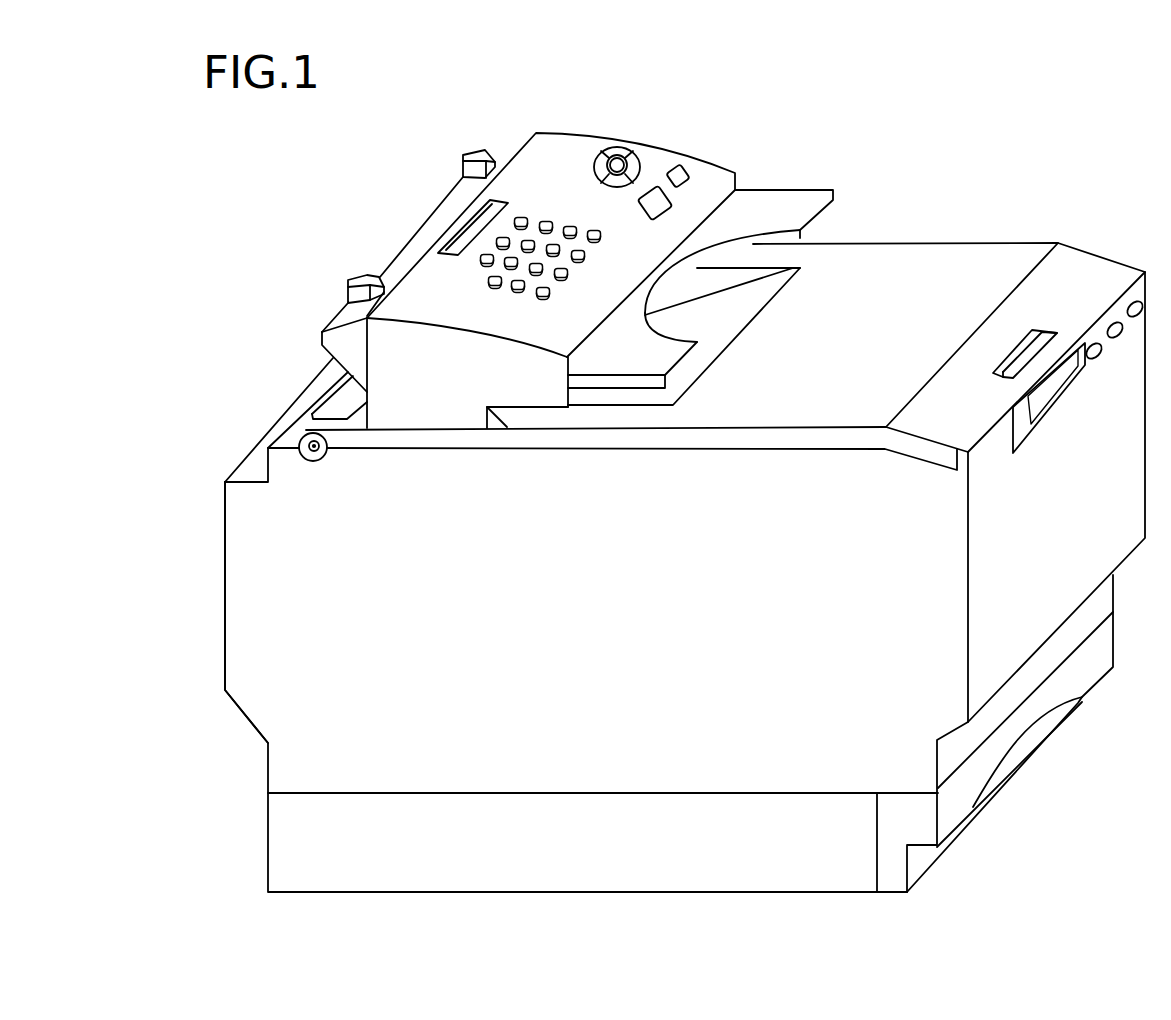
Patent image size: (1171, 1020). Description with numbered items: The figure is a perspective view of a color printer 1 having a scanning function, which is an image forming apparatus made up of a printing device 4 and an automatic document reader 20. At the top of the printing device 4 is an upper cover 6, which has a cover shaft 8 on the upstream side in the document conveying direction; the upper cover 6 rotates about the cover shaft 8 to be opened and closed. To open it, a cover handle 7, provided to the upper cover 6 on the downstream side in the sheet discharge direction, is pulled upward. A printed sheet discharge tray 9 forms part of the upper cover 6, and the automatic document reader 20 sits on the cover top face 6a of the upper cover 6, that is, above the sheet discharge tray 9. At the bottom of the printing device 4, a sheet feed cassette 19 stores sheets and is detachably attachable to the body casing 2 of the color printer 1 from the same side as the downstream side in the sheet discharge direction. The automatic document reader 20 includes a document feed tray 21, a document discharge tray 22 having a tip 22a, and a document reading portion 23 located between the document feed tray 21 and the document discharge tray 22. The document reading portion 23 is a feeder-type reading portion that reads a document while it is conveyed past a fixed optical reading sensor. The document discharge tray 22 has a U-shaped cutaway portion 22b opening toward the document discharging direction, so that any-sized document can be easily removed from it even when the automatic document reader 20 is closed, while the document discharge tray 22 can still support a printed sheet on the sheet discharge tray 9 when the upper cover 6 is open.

The color printer 1 is at (686, 130).
The body casing 2 is at (257, 656).
The printing device 4 is at (219, 566).
The upper cover 6 is at (778, 436).
The cover top face 6a is at (522, 420).
The cover handle 7 is at (1020, 347).
The cover shaft 8 is at (316, 449).
The sheet discharge tray 9 is at (750, 303).
The sheet feed cassette 19 is at (1102, 652).
The automatic document reader 20 is at (326, 314).
The document feed tray 21 is at (426, 238).
The document discharge tray 22 is at (750, 206).
The tip 22a is at (828, 216).
The U-shaped cutaway portion 22b is at (670, 280).
The document reading portion 23 is at (557, 146).